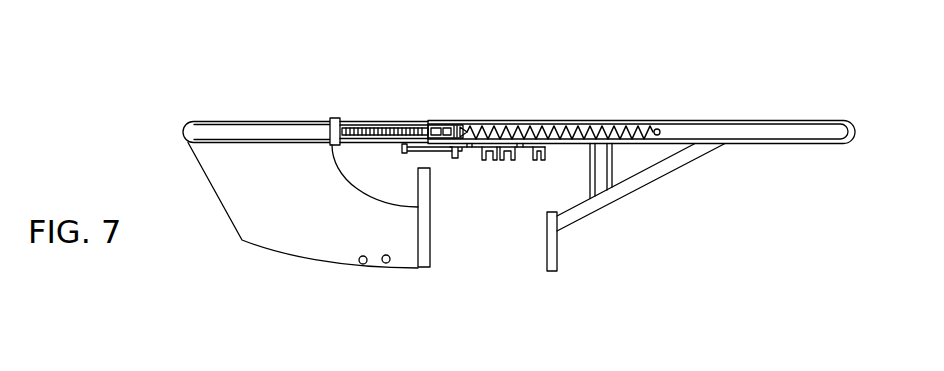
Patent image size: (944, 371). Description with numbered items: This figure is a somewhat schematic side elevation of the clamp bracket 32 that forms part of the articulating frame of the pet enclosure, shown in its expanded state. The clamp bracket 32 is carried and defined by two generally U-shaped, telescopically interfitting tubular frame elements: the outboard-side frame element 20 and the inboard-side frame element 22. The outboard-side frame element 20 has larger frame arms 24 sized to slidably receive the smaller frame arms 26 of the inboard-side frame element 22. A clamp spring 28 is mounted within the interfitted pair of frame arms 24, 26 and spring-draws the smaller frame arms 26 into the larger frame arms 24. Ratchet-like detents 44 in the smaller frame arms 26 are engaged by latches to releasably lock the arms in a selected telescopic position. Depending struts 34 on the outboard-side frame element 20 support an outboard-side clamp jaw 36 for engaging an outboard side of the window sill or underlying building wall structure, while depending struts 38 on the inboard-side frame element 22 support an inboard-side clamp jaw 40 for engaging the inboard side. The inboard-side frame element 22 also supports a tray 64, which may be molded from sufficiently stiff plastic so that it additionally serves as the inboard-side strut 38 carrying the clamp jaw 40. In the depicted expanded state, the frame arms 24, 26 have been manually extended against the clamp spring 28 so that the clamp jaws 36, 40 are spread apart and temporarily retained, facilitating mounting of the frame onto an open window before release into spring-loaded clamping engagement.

The outboard-side frame element 20 is at (787, 119).
The inboard-side frame element 22 is at (232, 120).
The frame arms 24 is at (635, 120).
The frame arms 26 is at (387, 120).
The clamp springs 28 is at (562, 119).
The clamp bracket 32 is at (636, 256).
The depending struts 34 is at (640, 182).
The outboard-side clamp jaw 36 is at (557, 258).
The depending struts 38 is at (248, 218).
The inboard-side clamp jaw 40 is at (430, 257).
The ratchet-like detents 44 is at (358, 123).
The tray 64 is at (312, 228).